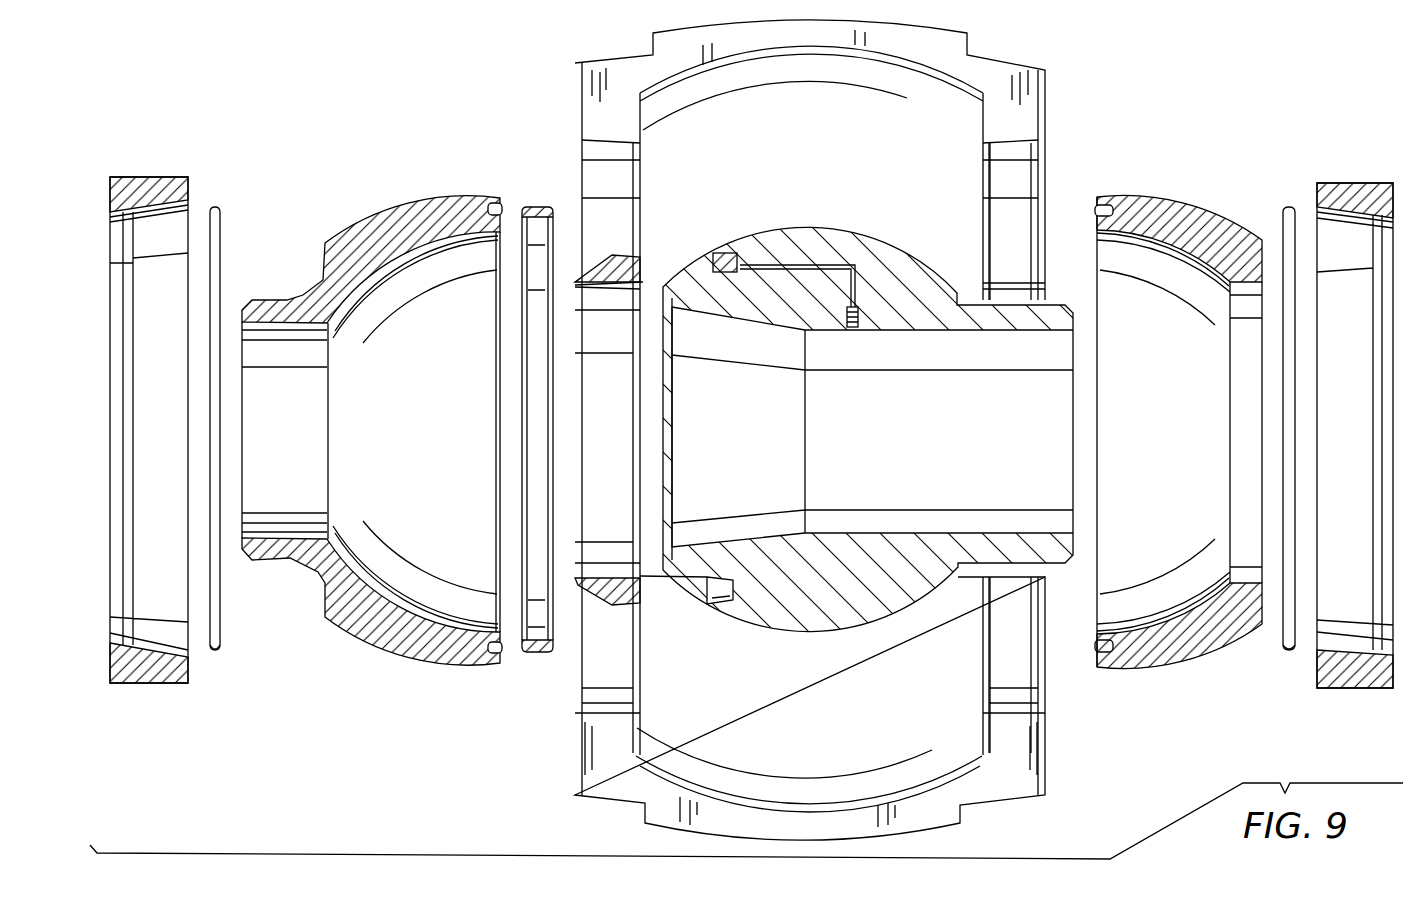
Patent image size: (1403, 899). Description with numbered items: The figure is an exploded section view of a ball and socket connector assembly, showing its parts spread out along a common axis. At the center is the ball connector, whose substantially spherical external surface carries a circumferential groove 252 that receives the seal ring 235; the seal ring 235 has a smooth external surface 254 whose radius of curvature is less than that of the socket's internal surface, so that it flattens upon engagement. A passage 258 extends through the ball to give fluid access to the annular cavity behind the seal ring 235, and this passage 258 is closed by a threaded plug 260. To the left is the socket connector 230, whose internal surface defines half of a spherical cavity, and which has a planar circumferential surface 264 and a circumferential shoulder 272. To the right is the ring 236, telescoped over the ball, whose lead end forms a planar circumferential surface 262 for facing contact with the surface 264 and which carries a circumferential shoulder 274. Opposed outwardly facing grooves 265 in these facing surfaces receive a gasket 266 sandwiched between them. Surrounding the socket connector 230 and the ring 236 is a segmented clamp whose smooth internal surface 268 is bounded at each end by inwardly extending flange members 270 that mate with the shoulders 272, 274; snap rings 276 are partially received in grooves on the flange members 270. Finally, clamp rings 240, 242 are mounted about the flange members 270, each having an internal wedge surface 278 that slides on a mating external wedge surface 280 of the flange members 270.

The socket connector 230 is at (378, 236).
The seal ring 235 is at (613, 255).
The ring 236 is at (1190, 224).
The clamp ring 240 is at (168, 178).
The clamp ring 242 is at (1357, 183).
The circumferential groove 252 is at (717, 262).
The smooth external surface 254 is at (593, 605).
The passage 258 is at (808, 262).
The threaded plug 260 is at (853, 327).
The planar circumferential surface 262 is at (1098, 205).
The planar circumferential surface 264 is at (500, 200).
The grooves 265 is at (492, 660).
The gasket 266 is at (540, 655).
The smooth internal surface 268 is at (810, 50).
The flange members 270 is at (1025, 140).
The circumferential shoulder 272 is at (326, 255).
The circumferential shoulder 274 is at (1263, 262).
The snap rings 276 is at (220, 652).
The internal wedge surface 278 is at (205, 210).
The external wedge surface 280 is at (998, 58).